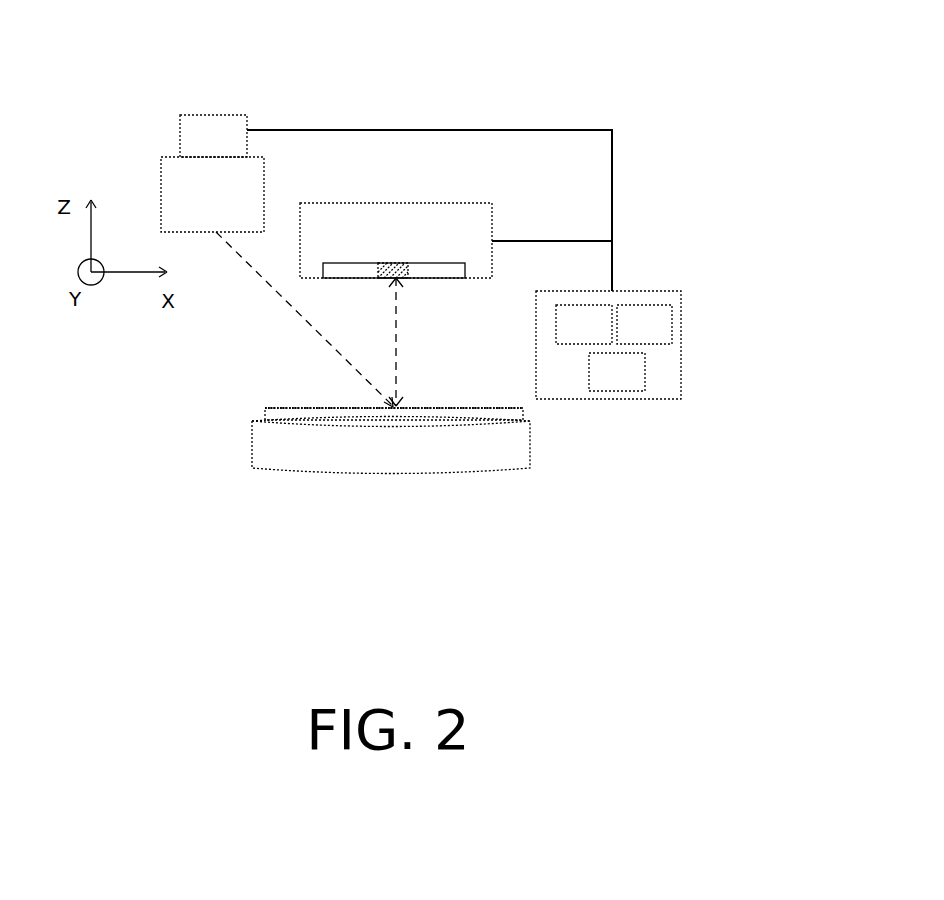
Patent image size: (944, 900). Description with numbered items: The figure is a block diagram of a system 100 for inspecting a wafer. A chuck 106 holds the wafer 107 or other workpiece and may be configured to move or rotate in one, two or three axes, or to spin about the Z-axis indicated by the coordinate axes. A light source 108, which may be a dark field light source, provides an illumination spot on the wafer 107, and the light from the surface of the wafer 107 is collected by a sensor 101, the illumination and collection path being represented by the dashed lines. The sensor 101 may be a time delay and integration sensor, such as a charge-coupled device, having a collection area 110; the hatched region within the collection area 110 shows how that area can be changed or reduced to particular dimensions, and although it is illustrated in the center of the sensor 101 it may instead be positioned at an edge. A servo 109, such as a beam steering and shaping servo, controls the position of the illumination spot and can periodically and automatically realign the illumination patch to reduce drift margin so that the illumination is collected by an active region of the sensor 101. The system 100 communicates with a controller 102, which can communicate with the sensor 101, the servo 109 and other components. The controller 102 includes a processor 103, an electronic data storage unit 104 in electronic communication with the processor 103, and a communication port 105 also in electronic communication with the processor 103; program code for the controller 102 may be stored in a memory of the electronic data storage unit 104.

The system 100 is at (547, 86).
The sensor 101 is at (378, 253).
The controller 102 is at (632, 297).
The processor 103 is at (566, 336).
The electronic data storage unit 104 is at (626, 336).
The communication port 105 is at (599, 384).
The chuck 106 is at (297, 470).
The wafer 107 is at (318, 408).
The light source 108 is at (195, 207).
The servo 109 is at (195, 149).
The collection area 110 is at (426, 278).